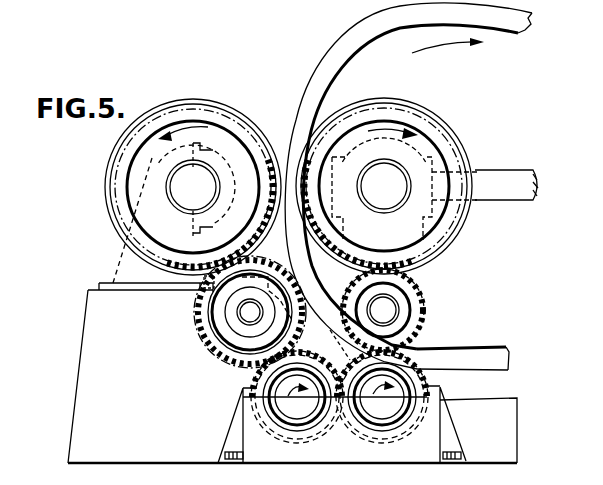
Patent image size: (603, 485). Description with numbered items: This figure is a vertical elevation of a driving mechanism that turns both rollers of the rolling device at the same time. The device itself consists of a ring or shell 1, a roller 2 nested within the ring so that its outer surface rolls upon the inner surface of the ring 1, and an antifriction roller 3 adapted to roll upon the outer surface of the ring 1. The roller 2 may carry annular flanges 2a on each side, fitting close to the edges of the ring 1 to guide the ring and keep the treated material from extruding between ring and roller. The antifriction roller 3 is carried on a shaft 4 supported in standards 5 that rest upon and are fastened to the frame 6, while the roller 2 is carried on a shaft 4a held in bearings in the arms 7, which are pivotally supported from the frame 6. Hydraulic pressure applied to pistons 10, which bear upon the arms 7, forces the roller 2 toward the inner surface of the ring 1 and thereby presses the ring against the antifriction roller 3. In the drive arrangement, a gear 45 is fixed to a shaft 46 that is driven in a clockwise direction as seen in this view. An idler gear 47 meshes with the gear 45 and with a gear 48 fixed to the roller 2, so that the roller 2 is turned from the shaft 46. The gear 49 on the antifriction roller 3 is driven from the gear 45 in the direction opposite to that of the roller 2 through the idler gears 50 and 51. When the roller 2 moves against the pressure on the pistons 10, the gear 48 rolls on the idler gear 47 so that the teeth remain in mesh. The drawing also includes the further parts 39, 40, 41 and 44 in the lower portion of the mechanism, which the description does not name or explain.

The ring 1 is at (327, 71).
The roller 2 is at (443, 130).
The annular flanges 2a is at (461, 136).
The antifriction roller 3 is at (265, 128).
The shaft 4 is at (181, 201).
The shaft 4a is at (387, 200).
The standards 5 is at (127, 269).
The frame 6 is at (90, 350).
The arms 7 is at (421, 242).
The pistons 10 is at (513, 178).
The shaft line 39 is at (335, 441).
The housing block 40 is at (463, 441).
The bracket 41 is at (214, 436).
The bracket 44 is at (365, 484).
The gear 45 is at (427, 382).
The shaft 46 is at (387, 410).
The idler gear 47 is at (423, 350).
The gear 48 is at (420, 278).
The gear 49 is at (181, 278).
The idler gear 50 is at (247, 365).
The idler gear 51 is at (345, 382).